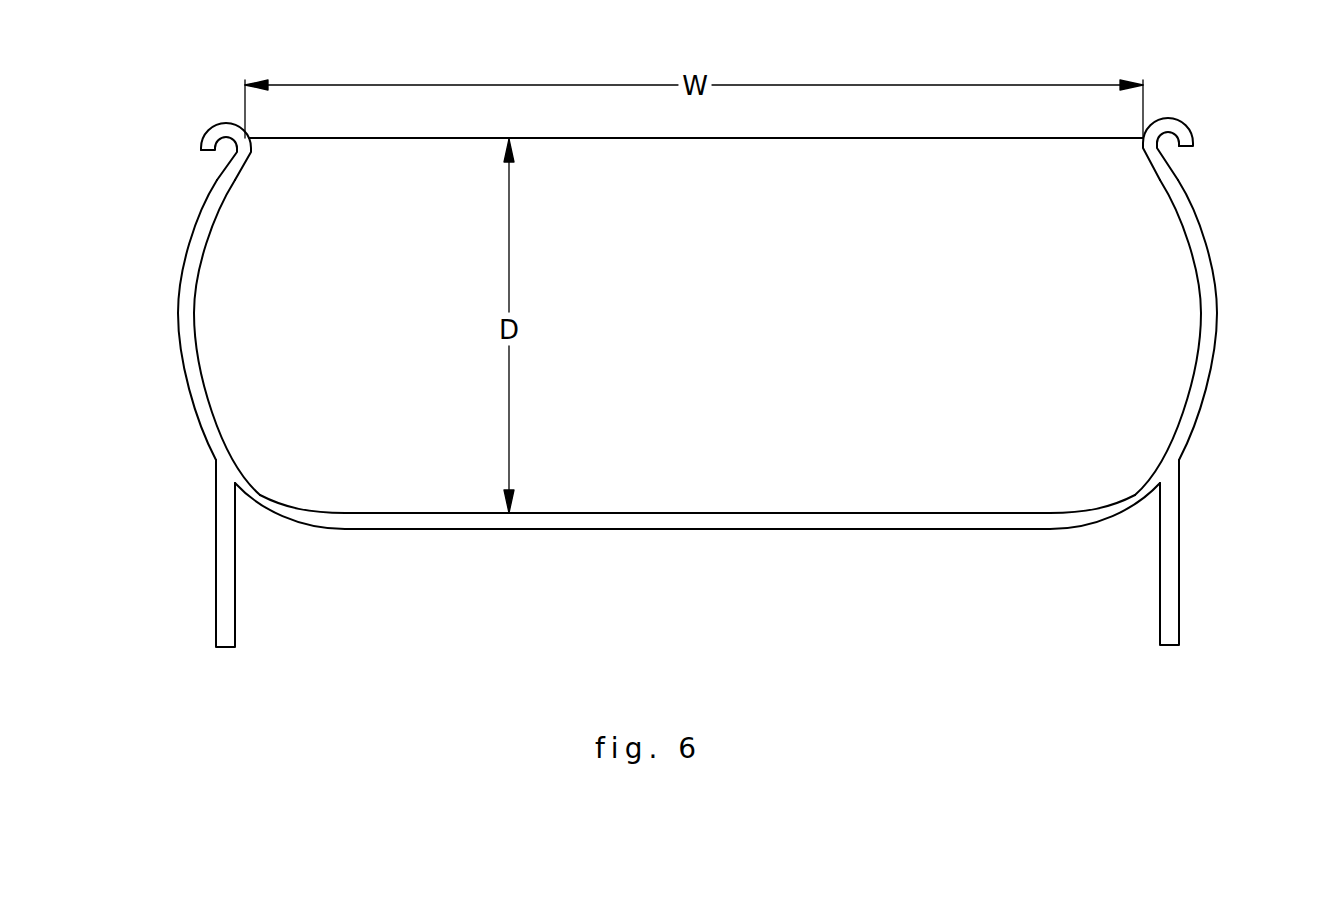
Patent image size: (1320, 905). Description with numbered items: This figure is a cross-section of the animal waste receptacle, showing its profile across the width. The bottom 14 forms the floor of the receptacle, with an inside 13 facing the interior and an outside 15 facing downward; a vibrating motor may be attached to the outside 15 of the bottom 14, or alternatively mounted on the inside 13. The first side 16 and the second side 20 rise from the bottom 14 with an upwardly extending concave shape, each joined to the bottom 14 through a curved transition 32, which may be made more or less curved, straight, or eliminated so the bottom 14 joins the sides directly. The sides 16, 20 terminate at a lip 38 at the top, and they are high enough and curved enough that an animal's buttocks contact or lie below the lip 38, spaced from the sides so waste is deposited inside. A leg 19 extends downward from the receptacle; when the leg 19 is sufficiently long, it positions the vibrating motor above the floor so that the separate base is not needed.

The lip 38 is at (206, 130).
The first side 16 is at (198, 292).
The second side 20 is at (1200, 325).
The curved transition 32 is at (248, 473).
The inside of bottom 13 is at (728, 513).
The bottom 14 is at (776, 524).
The outside of bottom 15 is at (847, 529).
The leg 19 is at (1170, 537).